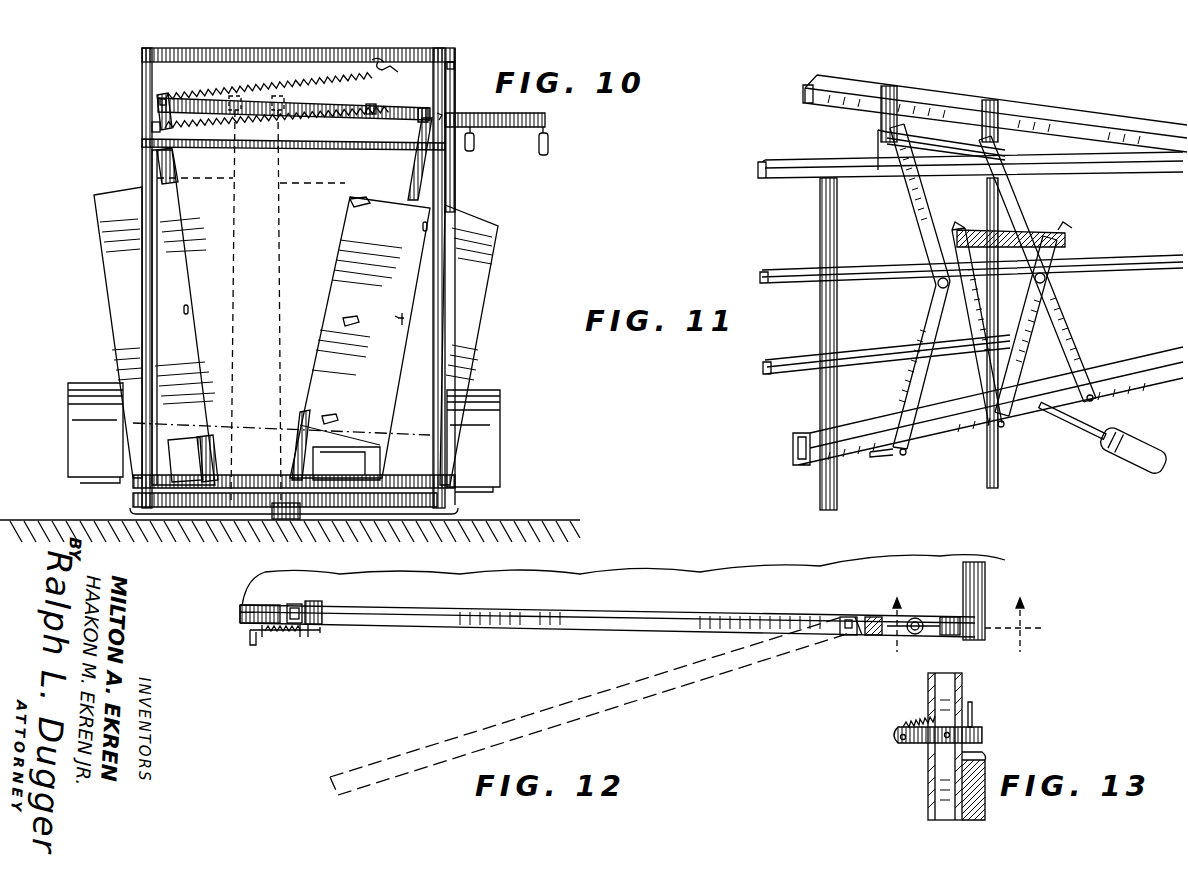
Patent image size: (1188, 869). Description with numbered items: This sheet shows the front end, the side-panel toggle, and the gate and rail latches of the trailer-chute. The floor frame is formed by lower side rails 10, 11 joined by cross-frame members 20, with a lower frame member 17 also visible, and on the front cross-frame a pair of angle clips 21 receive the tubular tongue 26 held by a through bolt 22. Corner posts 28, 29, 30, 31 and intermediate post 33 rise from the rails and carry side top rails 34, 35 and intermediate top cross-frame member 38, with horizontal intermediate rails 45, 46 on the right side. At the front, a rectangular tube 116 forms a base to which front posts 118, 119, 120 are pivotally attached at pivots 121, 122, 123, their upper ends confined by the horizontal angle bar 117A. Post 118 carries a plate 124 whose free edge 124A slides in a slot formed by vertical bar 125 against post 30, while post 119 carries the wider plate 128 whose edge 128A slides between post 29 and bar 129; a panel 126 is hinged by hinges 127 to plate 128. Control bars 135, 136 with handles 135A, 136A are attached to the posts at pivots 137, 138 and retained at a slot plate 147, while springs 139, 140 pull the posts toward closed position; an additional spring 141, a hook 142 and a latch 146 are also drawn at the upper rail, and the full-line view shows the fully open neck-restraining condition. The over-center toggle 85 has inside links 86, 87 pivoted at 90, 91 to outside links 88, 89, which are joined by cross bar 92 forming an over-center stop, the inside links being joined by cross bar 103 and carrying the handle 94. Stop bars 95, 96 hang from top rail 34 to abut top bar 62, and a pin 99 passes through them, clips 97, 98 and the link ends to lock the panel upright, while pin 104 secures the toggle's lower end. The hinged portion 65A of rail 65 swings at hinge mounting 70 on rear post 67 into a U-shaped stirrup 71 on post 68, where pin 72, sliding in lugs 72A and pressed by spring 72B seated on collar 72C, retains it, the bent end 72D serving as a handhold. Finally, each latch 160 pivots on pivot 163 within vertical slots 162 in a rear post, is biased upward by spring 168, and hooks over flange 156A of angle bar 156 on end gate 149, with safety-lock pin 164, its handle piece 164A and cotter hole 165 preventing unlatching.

In FIG. 10, the lower side rail 10 is at (135, 523).
In FIG. 10, the lower side rail 11 is at (437, 520).
In FIG. 10, the lower cross member 17 is at (178, 525).
In FIG. 10, the cross-frame member 20 is at (218, 520).
In FIG. 10, the angle clip 21 is at (238, 523).
In FIG. 10, the through bolt 22 is at (270, 523).
In FIG. 10, the tongue 26 is at (283, 525).
In FIG. 12, the vertical corner post 28 is at (950, 614).
In FIG. 10, the vertical corner post 29 is at (458, 60).
In FIG. 10, the vertical corner post 30 is at (142, 107).
In FIG. 11, the vertical corner post 31 is at (985, 208).
In FIG. 11, the intermediate upright post 33 is at (838, 245).
In FIG. 11, the side top rail 34 is at (885, 80).
In FIG. 11, the side top rail 35 is at (775, 160).
In FIG. 11, the intermediate top cross-frame member 38 is at (840, 160).
In FIG. 11, the horizontal intermediate rail 45 is at (805, 358).
In FIG. 11, the horizontal intermediate rail 46 is at (795, 270).
In FIG. 11, the top horizontal bar 62 is at (858, 470).
In FIG. 12, the intermediate horizontal bar 65 is at (258, 606).
In FIG. 12, the hinged rail portion 65A is at (430, 610).
In FIG. 12, the rear vertical post 67 is at (885, 636).
In FIG. 12, the intermediate vertical post 68 is at (300, 604).
In FIG. 12, the hinge mounting 70 is at (848, 614).
In FIG. 12, the U-shaped stirrup 71 is at (325, 602).
In FIG. 12, the latch pin 72 is at (306, 638).
In FIG. 12, the lug 72A is at (265, 640).
In FIG. 12, the spring 72B is at (280, 638).
In FIG. 12, the collar 72C is at (290, 640).
In FIG. 12, the bent end 72D is at (250, 640).
In FIG. 10, the toggle 85 is at (464, 101).
In FIG. 11, the toggle 85 is at (1040, 217).
In FIG. 11, the toggle link 86 is at (912, 205).
In FIG. 11, the toggle link 87 is at (1012, 200).
In FIG. 11, the cooperating link 88 is at (918, 380).
In FIG. 11, the cooperating link 89 is at (1022, 350).
In FIG. 11, the pivot 90 is at (936, 288).
In FIG. 11, the pivot 91 is at (1048, 282).
In FIG. 11, the cross bar 92 is at (1070, 236).
In FIG. 11, the handle 94 is at (1118, 455).
In FIG. 11, the stop bar 95 is at (1000, 112).
In FIG. 11, the stop bar 96 is at (900, 100).
In FIG. 11, the clip 97 is at (1003, 430).
In FIG. 11, the clip 98 is at (905, 458).
In FIG. 11, the pin 99 is at (950, 130).
In FIG. 11, the cross bar 103 is at (1000, 152).
In FIG. 11, the pin 104 is at (953, 440).
In FIG. 10, the rectangular tube base 116 is at (263, 470).
In FIG. 10, the horizontal angle bar 117A is at (277, 150).
In FIG. 10, the front post 118 is at (157, 155).
In FIG. 10, the front post 119 is at (288, 440).
In FIG. 10, the front post 120 is at (332, 438).
In FIG. 10, the pivot 121 is at (198, 468).
In FIG. 10, the pivot 122 is at (352, 165).
In FIG. 10, the pivot 123 is at (352, 472).
In FIG. 10, the steel plate 124 is at (182, 317).
In FIG. 10, the free edge 124A is at (107, 295).
In FIG. 10, the vertical bar 125 is at (140, 268).
In FIG. 10, the panel 126 is at (360, 337).
In FIG. 10, the hinge 127 is at (358, 203).
In FIG. 10, the plate 128 is at (469, 345).
In FIG. 10, the plate edge 128A is at (490, 310).
In FIG. 10, the bar 129 is at (445, 275).
In FIG. 10, the control bar 135 is at (292, 110).
In FIG. 10, the handle 135A is at (475, 155).
In FIG. 10, the control bar 136 is at (508, 122).
In FIG. 10, the handle 136A is at (552, 140).
In FIG. 10, the pivot pin 137 is at (163, 97).
In FIG. 10, the pivot 138 is at (370, 108).
In FIG. 10, the spring 139 is at (232, 148).
In FIG. 10, the spring 140 is at (262, 90).
In FIG. 10, the spring 141 is at (150, 127).
In FIG. 10, the hook 142 is at (388, 62).
In FIG. 10, the latch 146 is at (415, 110).
In FIG. 10, the retaining plate 147 is at (448, 100).
In FIG. 12, the end gate 149 is at (997, 567).
In FIG. 13, the angle bar end piece 156 is at (990, 768).
In FIG. 13, the flange 156A is at (978, 756).
In FIG. 12, the latch 160 is at (995, 639).
In FIG. 13, the latch 160 is at (993, 733).
In FIG. 13, the vertical slot 162 is at (930, 750).
In FIG. 13, the pivot 163 is at (935, 740).
In FIG. 13, the safety-lock pin 164 is at (945, 720).
In FIG. 13, the handle piece 164A is at (975, 712).
In FIG. 13, the hole 165 is at (900, 735).
In FIG. 13, the spring 168 is at (905, 700).